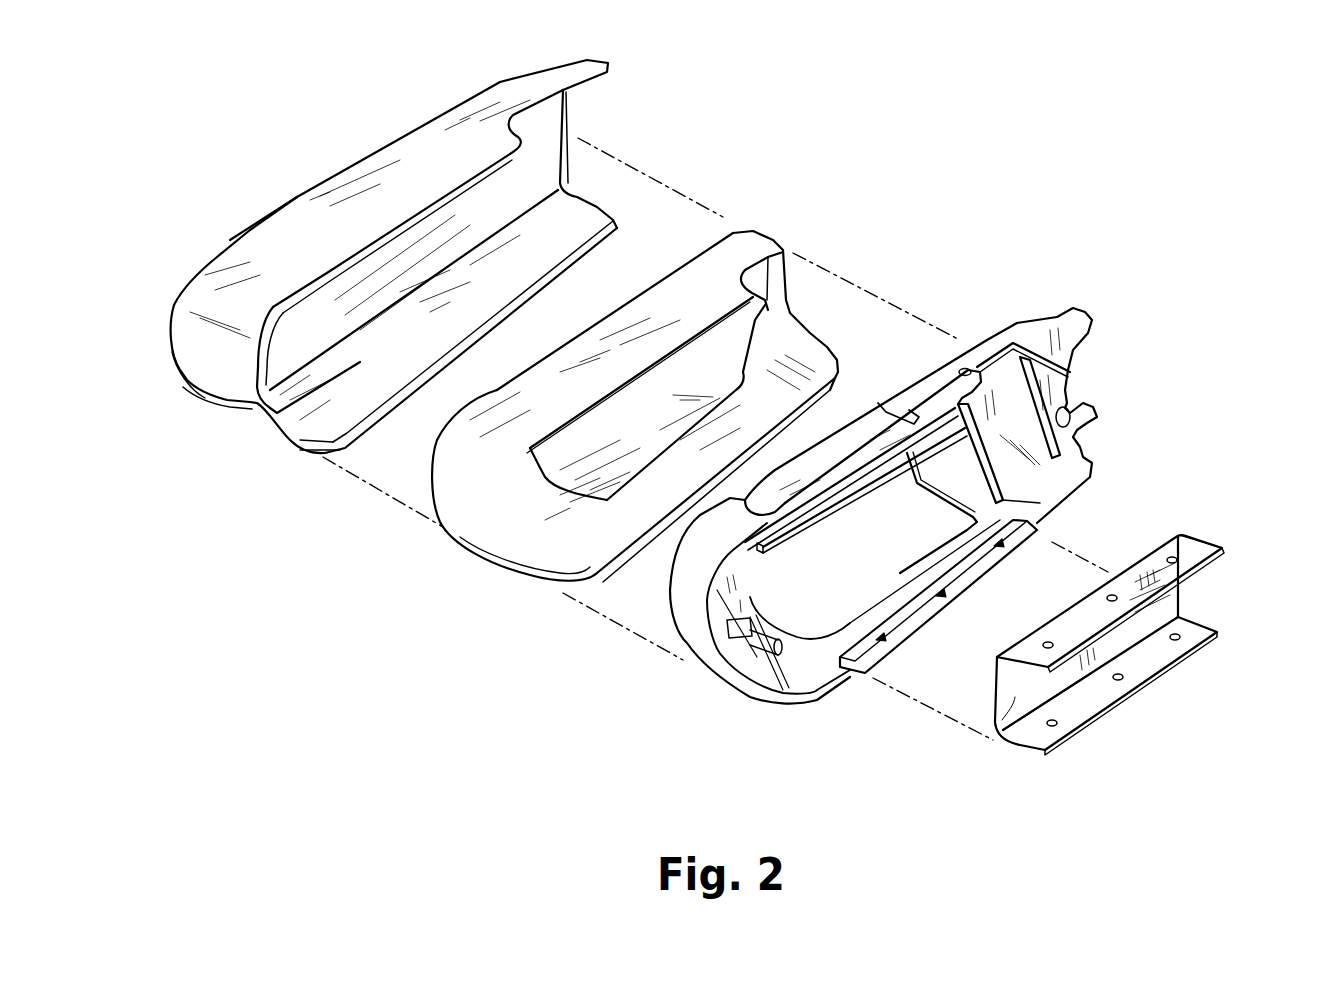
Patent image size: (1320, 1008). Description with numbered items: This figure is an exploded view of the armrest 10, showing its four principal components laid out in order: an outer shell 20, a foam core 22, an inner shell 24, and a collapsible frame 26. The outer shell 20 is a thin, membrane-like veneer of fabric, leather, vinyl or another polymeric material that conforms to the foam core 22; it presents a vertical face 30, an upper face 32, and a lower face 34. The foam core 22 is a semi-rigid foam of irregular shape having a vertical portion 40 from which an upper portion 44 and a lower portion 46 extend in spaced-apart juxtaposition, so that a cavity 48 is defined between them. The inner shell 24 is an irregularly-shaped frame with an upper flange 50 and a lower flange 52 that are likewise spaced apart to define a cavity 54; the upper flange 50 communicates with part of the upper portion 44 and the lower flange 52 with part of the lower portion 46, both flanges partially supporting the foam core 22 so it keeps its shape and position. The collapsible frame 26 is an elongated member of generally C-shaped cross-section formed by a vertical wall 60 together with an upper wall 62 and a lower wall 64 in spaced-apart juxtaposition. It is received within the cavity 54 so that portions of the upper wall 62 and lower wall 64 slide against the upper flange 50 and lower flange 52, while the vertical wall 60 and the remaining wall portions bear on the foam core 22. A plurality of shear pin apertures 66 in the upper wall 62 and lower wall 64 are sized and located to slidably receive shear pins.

The armrest 10 is at (877, 130).
The outer shell 20 is at (295, 194).
The foam core 22 is at (463, 538).
The inner shell 24 is at (697, 667).
The collapsible frame 26 is at (1183, 595).
The vertical face 30 is at (183, 387).
The upper face 32 is at (414, 147).
The lower face 34 is at (363, 430).
The vertical portion 40 is at (673, 270).
The upper portion 44 is at (711, 300).
The lower portion 46 is at (803, 368).
The cavity 48 is at (620, 454).
The upper flange 50 is at (797, 530).
The lower flange 52 is at (862, 675).
The cavity 54 is at (868, 567).
The vertical wall 60 is at (1010, 720).
The upper wall 62 is at (1223, 550).
The lower wall 64 is at (1037, 723).
The shear pin apertures 66 is at (1168, 557).